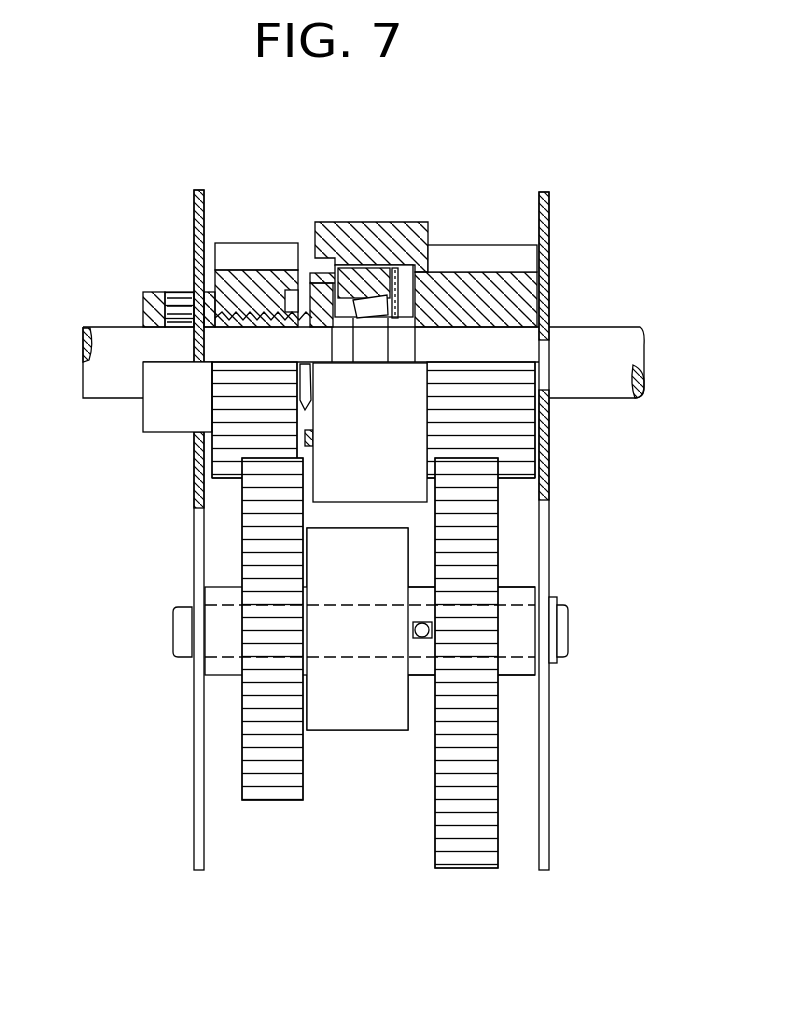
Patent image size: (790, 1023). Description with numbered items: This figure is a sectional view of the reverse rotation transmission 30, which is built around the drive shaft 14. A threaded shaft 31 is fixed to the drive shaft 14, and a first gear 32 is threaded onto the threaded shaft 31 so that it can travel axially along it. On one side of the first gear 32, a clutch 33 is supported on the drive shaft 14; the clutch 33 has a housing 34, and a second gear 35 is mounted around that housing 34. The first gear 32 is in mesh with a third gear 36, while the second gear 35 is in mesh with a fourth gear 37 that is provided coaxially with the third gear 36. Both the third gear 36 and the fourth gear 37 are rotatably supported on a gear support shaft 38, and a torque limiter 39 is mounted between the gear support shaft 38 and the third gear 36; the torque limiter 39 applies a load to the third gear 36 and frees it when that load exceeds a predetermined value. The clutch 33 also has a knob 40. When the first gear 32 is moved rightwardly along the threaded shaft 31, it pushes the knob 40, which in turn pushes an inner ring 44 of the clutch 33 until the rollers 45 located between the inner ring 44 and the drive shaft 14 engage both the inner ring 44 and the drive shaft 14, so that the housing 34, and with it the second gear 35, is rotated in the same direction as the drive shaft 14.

The drive shaft 14 is at (105, 342).
The reverse rotation transmission 30 is at (273, 232).
The threaded shaft 31 is at (220, 283).
The first gear 32 is at (227, 248).
The clutch 33 is at (420, 218).
The housing 34 is at (514, 293).
The second gear 35 is at (478, 252).
The third gear 36 is at (245, 747).
The fourth gear 37 is at (437, 783).
The gear support shaft 38 is at (187, 633).
The torque limiter 39 is at (350, 722).
The knob 40 is at (305, 275).
The inner ring 44 is at (375, 258).
The rollers 45 is at (370, 310).